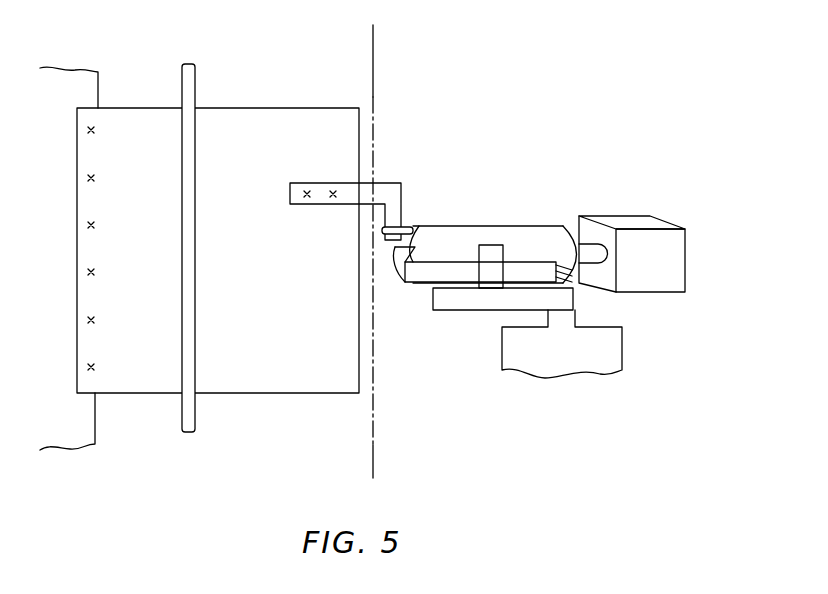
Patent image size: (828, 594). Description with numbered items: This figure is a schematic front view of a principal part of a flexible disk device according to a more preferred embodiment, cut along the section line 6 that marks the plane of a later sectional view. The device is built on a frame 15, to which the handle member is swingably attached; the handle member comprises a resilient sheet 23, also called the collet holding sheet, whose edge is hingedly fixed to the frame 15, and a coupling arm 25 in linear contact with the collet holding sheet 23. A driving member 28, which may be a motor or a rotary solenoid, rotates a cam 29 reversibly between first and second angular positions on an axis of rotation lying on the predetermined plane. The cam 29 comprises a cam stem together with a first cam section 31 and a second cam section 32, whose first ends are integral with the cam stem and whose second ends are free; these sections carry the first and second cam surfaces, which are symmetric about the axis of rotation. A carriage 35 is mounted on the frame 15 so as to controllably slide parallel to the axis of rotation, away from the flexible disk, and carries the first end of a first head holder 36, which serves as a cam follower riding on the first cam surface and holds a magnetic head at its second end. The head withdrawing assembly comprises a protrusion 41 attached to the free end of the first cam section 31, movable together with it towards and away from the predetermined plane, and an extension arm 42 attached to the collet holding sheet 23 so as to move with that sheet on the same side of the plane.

The section line 6 is at (362, 45).
The frame 15 is at (97, 437).
The resilient sheet 23 is at (286, 396).
The coupling arm 25 is at (197, 93).
The driving member 28 is at (672, 293).
The cam 29 is at (560, 223).
The first cam section 31 is at (494, 226).
The second cam section 32 is at (403, 283).
The carriage 35 is at (622, 358).
The first head holder 36 is at (474, 312).
The protrusion 41 is at (410, 224).
The extension arm 42 is at (402, 186).